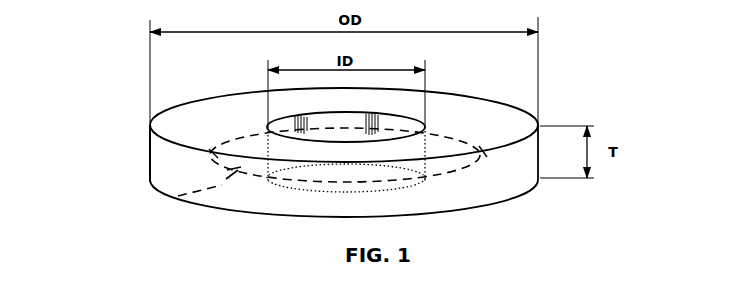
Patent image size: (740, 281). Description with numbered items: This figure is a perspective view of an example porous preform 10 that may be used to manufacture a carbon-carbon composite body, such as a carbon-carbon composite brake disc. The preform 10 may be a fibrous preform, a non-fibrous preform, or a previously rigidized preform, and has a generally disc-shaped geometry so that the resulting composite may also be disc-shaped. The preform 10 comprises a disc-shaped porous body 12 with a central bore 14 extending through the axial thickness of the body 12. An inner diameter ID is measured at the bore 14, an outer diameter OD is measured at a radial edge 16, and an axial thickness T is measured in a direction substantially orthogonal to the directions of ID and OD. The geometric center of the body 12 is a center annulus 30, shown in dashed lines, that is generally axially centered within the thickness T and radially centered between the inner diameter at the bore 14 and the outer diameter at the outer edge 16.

The porous preform 10 is at (128, 86).
The disc-shaped porous body 12 is at (483, 195).
The central bore 14 is at (434, 122).
The radial edge 16 is at (150, 158).
The center annulus 30 is at (174, 198).